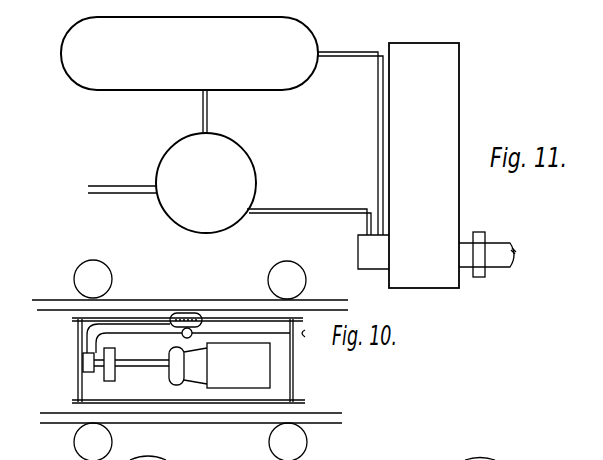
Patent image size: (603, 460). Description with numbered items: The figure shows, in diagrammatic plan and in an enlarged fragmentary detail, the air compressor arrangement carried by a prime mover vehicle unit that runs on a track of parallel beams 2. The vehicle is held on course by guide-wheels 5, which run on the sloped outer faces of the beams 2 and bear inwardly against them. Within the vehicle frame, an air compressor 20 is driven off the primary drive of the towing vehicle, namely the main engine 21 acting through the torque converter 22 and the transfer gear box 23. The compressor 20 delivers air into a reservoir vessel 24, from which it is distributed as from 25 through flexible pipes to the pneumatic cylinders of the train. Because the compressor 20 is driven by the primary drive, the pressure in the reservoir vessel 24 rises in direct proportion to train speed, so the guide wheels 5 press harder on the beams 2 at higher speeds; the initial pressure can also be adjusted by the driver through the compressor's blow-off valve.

In FIG. 10, the beam 2 is at (183, 302).
In FIG. 10, the guide-wheels 5 is at (102, 273).
In FIG. 11, the air compressor 20 is at (358, 241).
In FIG. 10, the air compressor 20 is at (83, 363).
In FIG. 10, the main engine 21 is at (238, 365).
In FIG. 10, the torque converter 22 is at (182, 372).
In FIG. 11, the transfer gear box 23 is at (447, 127).
In FIG. 10, the transfer gear box 23 is at (108, 383).
In FIG. 11, the reservoir vessel 24 is at (189, 53).
In FIG. 10, the reservoir vessel 24 is at (205, 317).
In FIG. 11, the distributor 25 is at (172, 161).
In FIG. 10, the distributor 25 is at (182, 335).